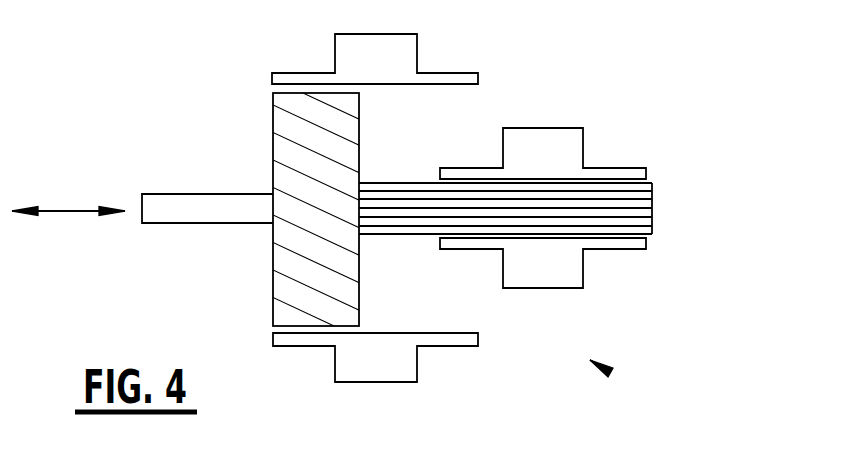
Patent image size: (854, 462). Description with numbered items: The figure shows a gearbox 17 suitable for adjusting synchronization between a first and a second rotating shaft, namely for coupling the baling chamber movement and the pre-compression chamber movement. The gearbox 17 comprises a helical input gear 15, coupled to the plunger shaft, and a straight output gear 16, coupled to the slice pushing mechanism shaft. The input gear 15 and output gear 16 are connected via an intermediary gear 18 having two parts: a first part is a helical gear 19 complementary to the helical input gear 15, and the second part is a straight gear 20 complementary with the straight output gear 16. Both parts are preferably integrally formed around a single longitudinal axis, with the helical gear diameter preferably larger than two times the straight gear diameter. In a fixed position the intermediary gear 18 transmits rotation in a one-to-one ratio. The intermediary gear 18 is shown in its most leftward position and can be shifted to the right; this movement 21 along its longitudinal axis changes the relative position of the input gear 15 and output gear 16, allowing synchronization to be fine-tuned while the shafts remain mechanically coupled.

The helical input gear 15 is at (380, 372).
The straight output gear 16 is at (551, 143).
The gearbox 17 is at (606, 370).
The intermediary gear 18 is at (180, 212).
The helical gear 19 is at (338, 300).
The straight gear 20 is at (640, 205).
The movement 21 is at (78, 209).